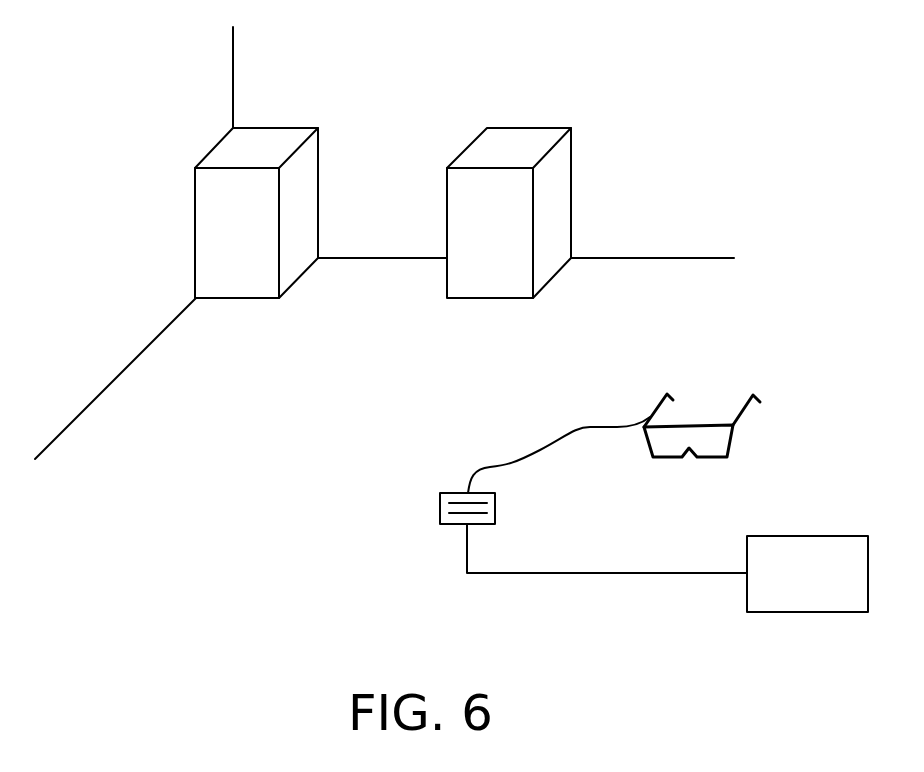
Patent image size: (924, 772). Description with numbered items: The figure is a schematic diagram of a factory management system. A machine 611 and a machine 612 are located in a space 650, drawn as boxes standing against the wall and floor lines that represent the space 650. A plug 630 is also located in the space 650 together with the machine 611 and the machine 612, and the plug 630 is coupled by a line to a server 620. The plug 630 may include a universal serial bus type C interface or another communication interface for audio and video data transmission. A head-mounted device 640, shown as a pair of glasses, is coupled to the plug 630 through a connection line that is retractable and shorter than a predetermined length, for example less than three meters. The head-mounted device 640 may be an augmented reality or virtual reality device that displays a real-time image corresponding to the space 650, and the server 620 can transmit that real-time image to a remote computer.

The machine 611 is at (528, 138).
The machine 612 is at (278, 138).
The server 620 is at (830, 535).
The plug 630 is at (440, 508).
The head-mounted device 640 is at (750, 390).
The space 650 is at (230, 402).